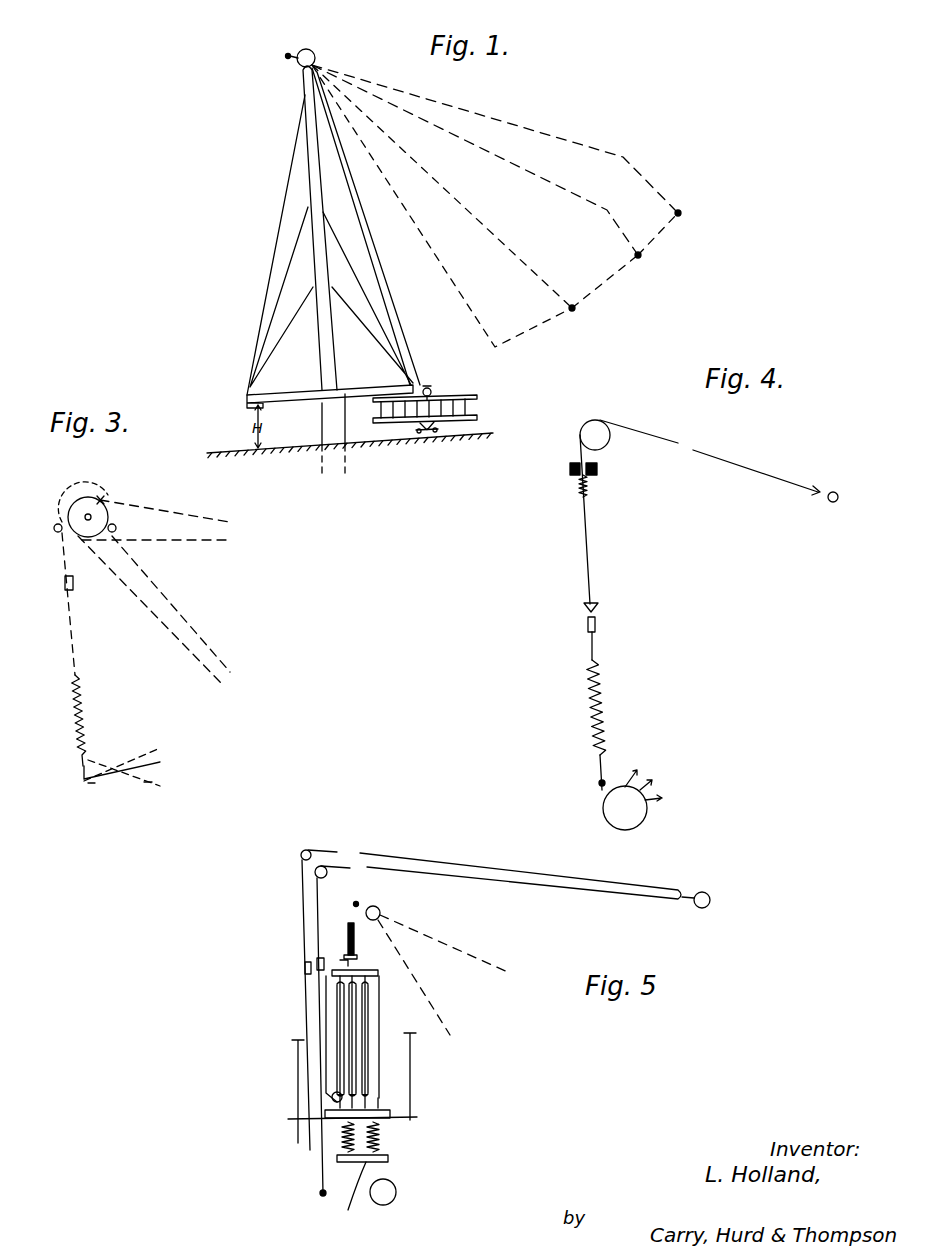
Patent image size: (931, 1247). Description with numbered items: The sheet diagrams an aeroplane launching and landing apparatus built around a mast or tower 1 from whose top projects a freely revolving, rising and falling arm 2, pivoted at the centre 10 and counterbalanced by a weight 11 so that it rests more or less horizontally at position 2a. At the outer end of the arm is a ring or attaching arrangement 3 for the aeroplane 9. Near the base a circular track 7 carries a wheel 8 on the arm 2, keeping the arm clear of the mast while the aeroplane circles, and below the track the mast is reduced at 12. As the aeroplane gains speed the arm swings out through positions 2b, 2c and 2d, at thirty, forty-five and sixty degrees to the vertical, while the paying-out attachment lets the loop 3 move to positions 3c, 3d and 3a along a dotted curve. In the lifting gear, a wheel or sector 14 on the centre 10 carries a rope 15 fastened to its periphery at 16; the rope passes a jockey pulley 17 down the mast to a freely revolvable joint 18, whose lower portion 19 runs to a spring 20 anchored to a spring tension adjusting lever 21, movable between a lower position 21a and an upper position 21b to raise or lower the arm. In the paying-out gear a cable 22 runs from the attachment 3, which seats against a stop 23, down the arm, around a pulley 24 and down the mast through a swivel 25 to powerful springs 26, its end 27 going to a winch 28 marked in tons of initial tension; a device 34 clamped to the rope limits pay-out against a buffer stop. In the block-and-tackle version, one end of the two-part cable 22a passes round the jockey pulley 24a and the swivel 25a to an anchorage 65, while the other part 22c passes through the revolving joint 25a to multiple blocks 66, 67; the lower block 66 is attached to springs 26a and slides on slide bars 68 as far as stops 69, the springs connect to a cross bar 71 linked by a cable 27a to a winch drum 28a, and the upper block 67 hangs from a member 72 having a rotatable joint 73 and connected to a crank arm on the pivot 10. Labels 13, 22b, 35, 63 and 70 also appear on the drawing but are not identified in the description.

In FIG. 1, the mast or tower 1 is at (308, 203).
In FIG. 1, the arm 2 is at (390, 283).
In FIG. 3, the arm 2 is at (176, 598).
In FIG. 5, the arm 2 is at (425, 1000).
In FIG. 1, the horizontal position of arm 2a is at (513, 123).
In FIG. 3, the horizontal position of arm 2a is at (180, 507).
In FIG. 5, the horizontal position of arm 2a is at (454, 941).
In FIG. 1, the arm position at thirty degrees 2b is at (449, 276).
In FIG. 1, the arm position at forty-five degrees 2c is at (484, 223).
In FIG. 1, the arm position at sixty degrees 2d is at (508, 160).
In FIG. 1, the attaching and releasing arrangement 3 is at (433, 391).
In FIG. 5, the attaching and releasing arrangement 3 is at (711, 897).
In FIG. 1, the loop position a 3a is at (681, 213).
In FIG. 1, the loop position c 3c is at (575, 310).
In FIG. 1, the loop position d 3d is at (641, 257).
In FIG. 1, the circular track 7 is at (245, 395).
In FIG. 1, the wheel 8 is at (430, 386).
In FIG. 1, the aeroplane 9 is at (479, 404).
In FIG. 1, the pivot 10 is at (310, 50).
In FIG. 3, the pivot 10 is at (88, 514).
In FIG. 5, the pivot 10 is at (381, 910).
In FIG. 1, the counterbalancing weight 11 is at (285, 56).
In FIG. 1, the reduced portion of mast 12 is at (322, 426).
In FIG. 1, the ground 13 is at (221, 452).
In FIG. 3, the wheel or sector 14 is at (103, 499).
In FIG. 3, the rope or cable 15 is at (65, 555).
In FIG. 3, the rope attachment point 16 is at (116, 524).
In FIG. 3, the jockey pulley 17 is at (54, 528).
In FIG. 3, the freely revolvable joint 18 is at (65, 583).
In FIG. 3, the lower portion of rope 19 is at (72, 618).
In FIG. 3, the spring 20 is at (75, 700).
In FIG. 3, the spring tension adjusting lever 21 is at (93, 770).
In FIG. 3, the lower lever position 21a is at (92, 787).
In FIG. 3, the upper lever position 21b is at (147, 784).
In FIG. 4, the cable 22 is at (658, 433).
In FIG. 5, the two part cable 22a is at (615, 884).
In FIG. 5, the cable lower run 22b is at (300, 1000).
In FIG. 5, the other cable part 22c is at (300, 893).
In FIG. 4, the stop or seating 23 is at (826, 491).
In FIG. 4, the pulley 24 is at (606, 447).
In FIG. 5, the jockey pulley 24a is at (300, 855).
In FIG. 4, the swivel 25 is at (605, 625).
In FIG. 5, the swivel or revolving joint 25a is at (305, 970).
In FIG. 4, the powerful springs 26 is at (590, 697).
In FIG. 5, the spring 26a is at (385, 1135).
In FIG. 4, the cable end 27 is at (605, 815).
In FIG. 5, the cable 27a is at (361, 1204).
In FIG. 4, the winch 28 is at (640, 826).
In FIG. 5, the winch drum 28a is at (395, 1195).
In FIG. 4, the clamped device 34 is at (585, 607).
In FIG. 4, the cable clamp 35 is at (575, 496).
In FIG. 5, the post cap 63 is at (412, 1034).
In FIG. 5, the anchorage 65 is at (318, 1193).
In FIG. 5, the lower block 66 is at (400, 1100).
In FIG. 5, the upper block 67 is at (380, 972).
In FIG. 5, the slide bars 68 is at (296, 1059).
In FIG. 5, the stops 69 is at (292, 1038).
In FIG. 5, the cross bar 70 is at (290, 1117).
In FIG. 5, the cross bar 71 is at (393, 1160).
In FIG. 5, the member 72 is at (356, 940).
In FIG. 5, the rotatable joint 73 is at (343, 957).